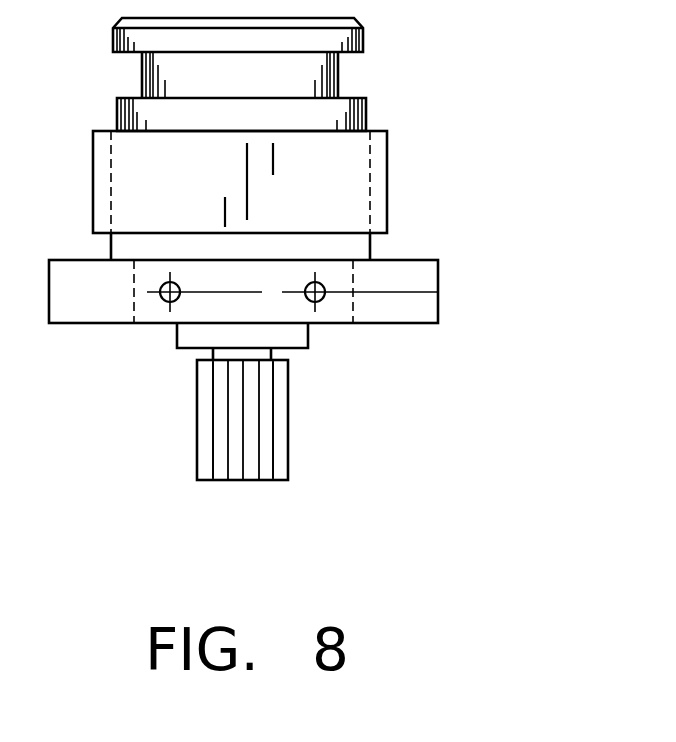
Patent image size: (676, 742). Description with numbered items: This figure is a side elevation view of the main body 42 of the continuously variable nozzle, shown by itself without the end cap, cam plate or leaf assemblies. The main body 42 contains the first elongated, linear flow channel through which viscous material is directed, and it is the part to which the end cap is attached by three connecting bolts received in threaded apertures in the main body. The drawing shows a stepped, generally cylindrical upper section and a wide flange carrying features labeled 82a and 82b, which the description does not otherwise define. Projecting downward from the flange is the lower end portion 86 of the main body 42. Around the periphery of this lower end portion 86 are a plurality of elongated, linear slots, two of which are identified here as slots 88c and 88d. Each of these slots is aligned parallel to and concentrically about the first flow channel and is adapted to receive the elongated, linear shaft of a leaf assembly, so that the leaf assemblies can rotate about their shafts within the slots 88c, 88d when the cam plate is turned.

The main body 42 is at (445, 80).
The first mounting hole 82a is at (164, 310).
The second mounting hole 82b is at (320, 305).
The lower end portion 86 is at (184, 431).
The elongated, linear slot 88c is at (223, 482).
The elongated, linear slot 88d is at (265, 482).